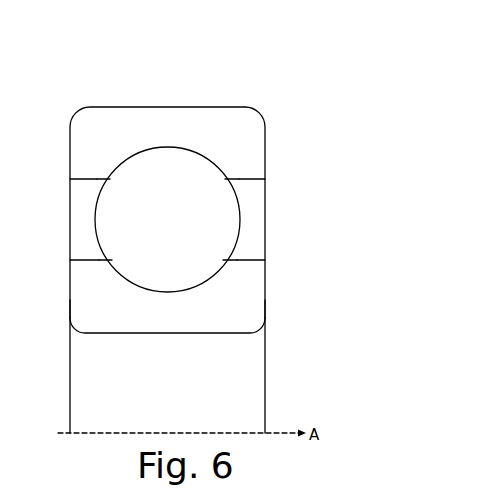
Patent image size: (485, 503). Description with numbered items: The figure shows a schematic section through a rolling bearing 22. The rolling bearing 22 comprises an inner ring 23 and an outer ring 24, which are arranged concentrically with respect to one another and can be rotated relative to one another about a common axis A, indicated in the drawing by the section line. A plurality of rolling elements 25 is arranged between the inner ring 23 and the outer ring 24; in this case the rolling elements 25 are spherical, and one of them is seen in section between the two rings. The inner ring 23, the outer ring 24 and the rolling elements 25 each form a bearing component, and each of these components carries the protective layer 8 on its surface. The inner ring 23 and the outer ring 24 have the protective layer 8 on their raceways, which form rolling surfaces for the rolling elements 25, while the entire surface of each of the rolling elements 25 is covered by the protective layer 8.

The protective layer 8 is at (207, 200).
The rolling bearing 22 is at (286, 99).
The inner ring 23 is at (244, 298).
The outer ring 24 is at (93, 128).
The rolling elements 25 is at (170, 172).